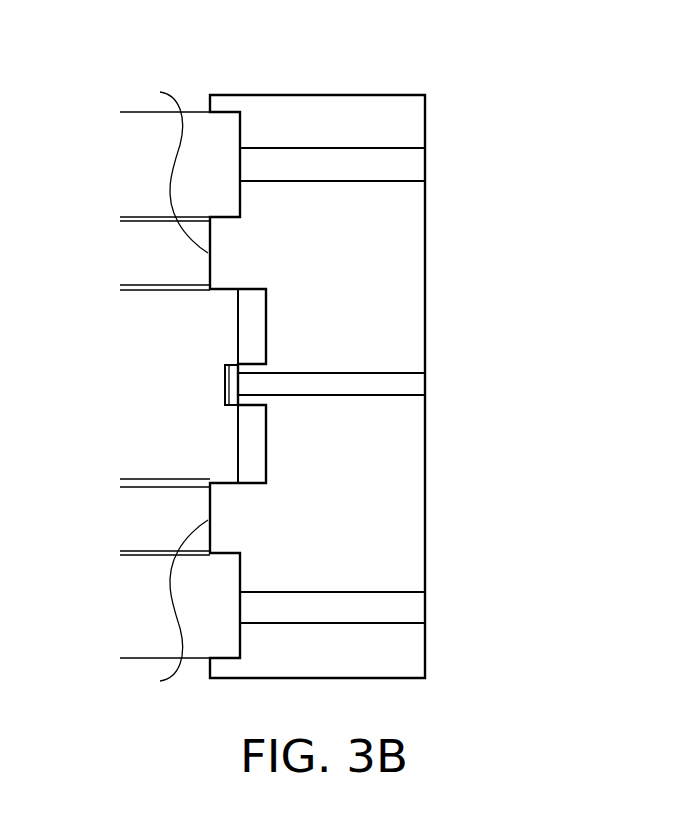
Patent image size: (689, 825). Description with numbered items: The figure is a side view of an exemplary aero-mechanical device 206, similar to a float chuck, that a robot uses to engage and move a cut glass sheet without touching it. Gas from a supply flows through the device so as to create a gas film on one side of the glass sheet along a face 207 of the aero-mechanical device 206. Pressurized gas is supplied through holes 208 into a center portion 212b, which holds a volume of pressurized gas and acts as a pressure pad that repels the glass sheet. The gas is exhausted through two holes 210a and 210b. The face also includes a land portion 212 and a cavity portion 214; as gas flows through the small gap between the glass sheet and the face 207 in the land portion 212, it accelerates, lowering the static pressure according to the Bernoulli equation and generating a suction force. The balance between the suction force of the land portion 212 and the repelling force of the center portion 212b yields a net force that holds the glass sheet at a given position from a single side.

The aero-mechanical device 206 is at (508, 72).
The face 207 is at (210, 101).
The holes 208 is at (238, 364).
The hole 210a is at (425, 168).
The hole 210b is at (425, 610).
The land portion 212 is at (120, 221).
The center portion 212b is at (120, 290).
The cavity portion 214 is at (120, 112).